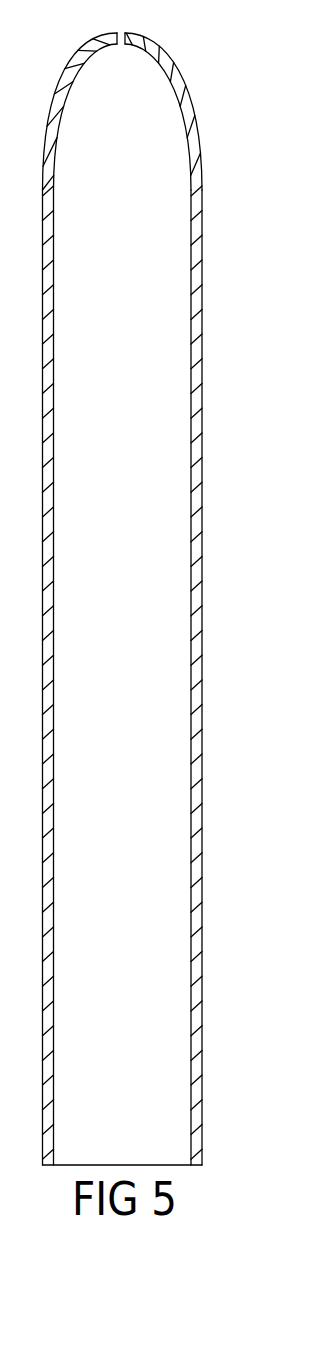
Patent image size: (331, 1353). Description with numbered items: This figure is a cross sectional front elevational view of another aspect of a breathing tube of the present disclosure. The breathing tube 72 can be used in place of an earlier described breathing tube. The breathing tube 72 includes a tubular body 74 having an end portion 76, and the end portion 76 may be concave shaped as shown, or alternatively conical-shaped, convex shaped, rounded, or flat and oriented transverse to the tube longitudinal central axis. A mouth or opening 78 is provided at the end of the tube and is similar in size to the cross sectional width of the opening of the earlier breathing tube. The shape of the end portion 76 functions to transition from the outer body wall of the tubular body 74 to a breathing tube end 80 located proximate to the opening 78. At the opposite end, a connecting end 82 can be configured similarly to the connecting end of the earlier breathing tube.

The breathing tube 72 is at (164, 583).
The tubular body 74 is at (200, 448).
The end portion 76 is at (143, 95).
The opening 78 is at (121, 33).
The breathing tube end 80 is at (115, 33).
The connecting end 82 is at (196, 1142).